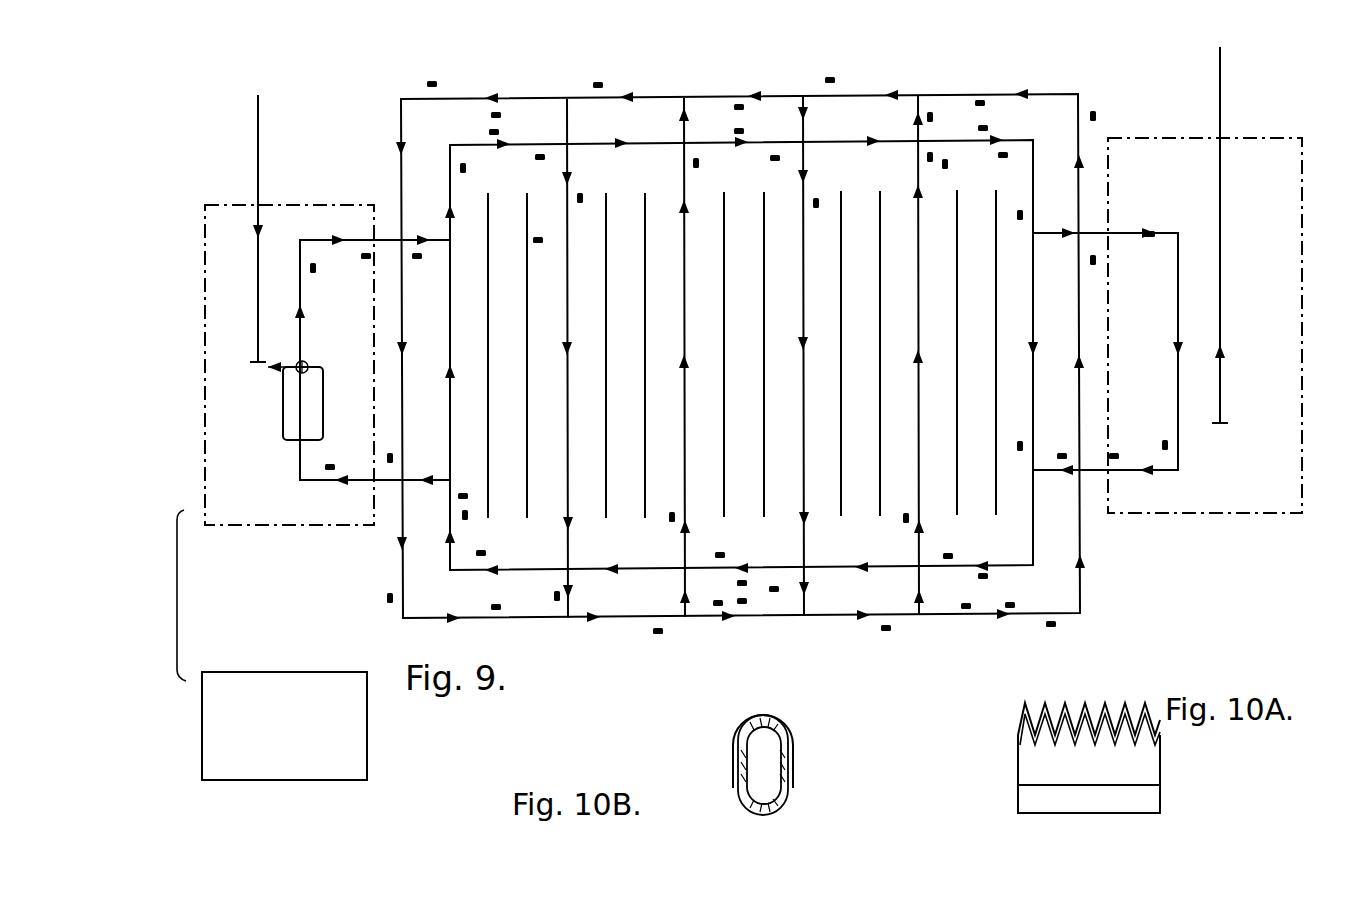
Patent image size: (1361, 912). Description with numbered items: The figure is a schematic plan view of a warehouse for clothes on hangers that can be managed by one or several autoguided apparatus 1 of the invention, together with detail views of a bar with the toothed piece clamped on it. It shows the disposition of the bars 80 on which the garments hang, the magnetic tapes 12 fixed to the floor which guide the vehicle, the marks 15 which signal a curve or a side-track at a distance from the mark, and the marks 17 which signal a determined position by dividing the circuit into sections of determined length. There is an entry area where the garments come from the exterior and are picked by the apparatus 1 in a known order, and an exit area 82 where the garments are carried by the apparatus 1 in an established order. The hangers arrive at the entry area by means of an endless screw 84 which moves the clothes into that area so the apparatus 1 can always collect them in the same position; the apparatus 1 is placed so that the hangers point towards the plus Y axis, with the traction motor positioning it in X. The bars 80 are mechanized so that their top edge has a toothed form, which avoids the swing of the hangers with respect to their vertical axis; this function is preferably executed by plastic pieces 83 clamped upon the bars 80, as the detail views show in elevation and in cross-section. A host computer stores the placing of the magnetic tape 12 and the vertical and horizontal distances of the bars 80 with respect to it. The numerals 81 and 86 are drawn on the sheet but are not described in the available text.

In FIG. 9, the apparatus 1 is at (283, 440).
In FIG. 9, the magnetic strip 12 is at (678, 160).
In FIG. 9, the marks 15 is at (1090, 120).
In FIG. 9, the marks 17 is at (735, 130).
In FIG. 9, the bars 80 is at (527, 194).
In FIG. 10A, the bars 80 is at (1026, 797).
In FIG. 10B, the bars 80 is at (746, 803).
In FIG. 9, the loading station 81 is at (222, 217).
In FIG. 9, the exit area 82 is at (1270, 146).
In FIG. 10A, the plastic pieces 83 is at (1020, 716).
In FIG. 10B, the plastic pieces 83 is at (738, 714).
In FIG. 9, the endless screw 84 is at (258, 141).
In FIG. 9, the controller 86 is at (274, 681).